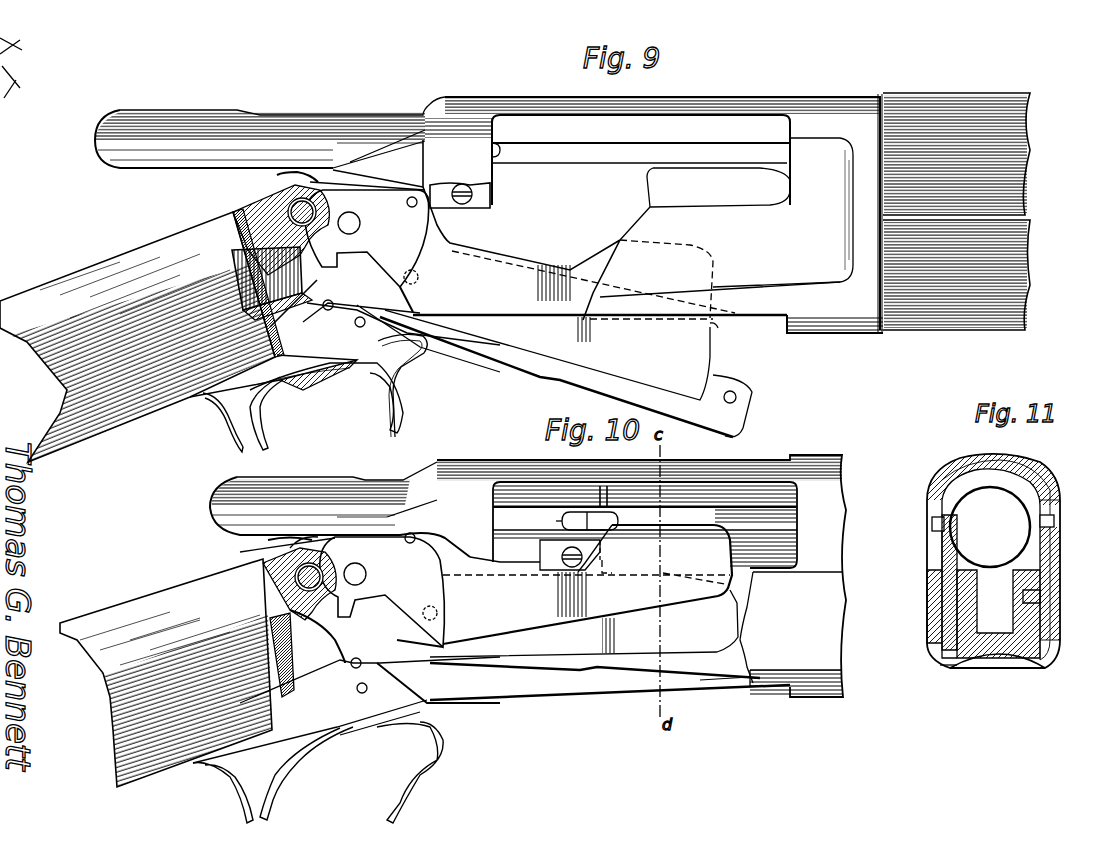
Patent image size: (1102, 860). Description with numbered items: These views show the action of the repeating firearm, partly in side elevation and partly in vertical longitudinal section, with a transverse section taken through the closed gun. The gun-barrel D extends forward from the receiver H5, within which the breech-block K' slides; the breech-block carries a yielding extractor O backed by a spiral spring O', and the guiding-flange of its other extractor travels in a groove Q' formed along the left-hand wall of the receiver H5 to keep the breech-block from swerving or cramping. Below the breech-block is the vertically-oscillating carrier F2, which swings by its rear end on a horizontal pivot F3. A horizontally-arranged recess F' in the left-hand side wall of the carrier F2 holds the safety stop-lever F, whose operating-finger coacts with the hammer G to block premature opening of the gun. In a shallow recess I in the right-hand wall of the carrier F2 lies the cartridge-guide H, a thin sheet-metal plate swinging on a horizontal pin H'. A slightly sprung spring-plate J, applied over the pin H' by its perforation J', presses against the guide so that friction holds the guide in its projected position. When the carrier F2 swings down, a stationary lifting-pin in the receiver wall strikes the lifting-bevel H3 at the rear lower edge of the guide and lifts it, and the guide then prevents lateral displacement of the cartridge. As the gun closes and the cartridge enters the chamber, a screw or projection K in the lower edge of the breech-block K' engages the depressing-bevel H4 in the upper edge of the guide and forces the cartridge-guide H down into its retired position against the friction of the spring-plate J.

In FIG. 9, the breech-block K' is at (270, 138).
In FIG. 10, the breech-block K' is at (340, 505).
In FIG. 9, the receiver H5 is at (515, 97).
In FIG. 10, the receiver H5 is at (641, 576).
In FIG. 11, the receiver H5 is at (930, 604).
In FIG. 9, the extractor O is at (641, 160).
In FIG. 10, the extractor O is at (645, 525).
In FIG. 10, the spiral spring O' is at (549, 522).
In FIG. 9, the screw or projection K is at (473, 195).
In FIG. 10, the screw or projection K is at (556, 555).
In FIG. 9, the cartridge-guide H is at (626, 241).
In FIG. 10, the cartridge-guide H is at (587, 589).
In FIG. 11, the cartridge-guide H is at (961, 568).
In FIG. 9, the depressing-bevel H4 is at (625, 247).
In FIG. 10, the depressing-bevel H4 is at (608, 552).
In FIG. 9, the lifting-bevel H3 is at (424, 299).
In FIG. 10, the lifting-bevel H3 is at (440, 628).
In FIG. 9, the horizontal pin H' is at (355, 214).
In FIG. 10, the horizontal pin H' is at (367, 569).
In FIG. 9, the spring-plate J is at (367, 238).
In FIG. 10, the spring-plate J is at (382, 592).
In FIG. 9, the perforation J' is at (391, 216).
In FIG. 10, the perforation J' is at (382, 546).
In FIG. 9, the horizontal pivot F3 is at (306, 205).
In FIG. 10, the horizontal pivot F3 is at (312, 566).
In FIG. 9, the hammer G is at (277, 175).
In FIG. 10, the hammer G is at (263, 549).
In FIG. 9, the gun-barrel D is at (956, 211).
In FIG. 9, the shallow recess I is at (566, 373).
In FIG. 10, the shallow recess I is at (610, 645).
In FIG. 11, the shallow recess I is at (930, 640).
In FIG. 9, the carrier F2 is at (725, 341).
In FIG. 10, the carrier F2 is at (725, 667).
In FIG. 11, the carrier F2 is at (960, 670).
In FIG. 11, the recess F' is at (997, 680).
In FIG. 11, the safety stop-lever F is at (993, 574).
In FIG. 11, the groove Q' is at (1063, 518).